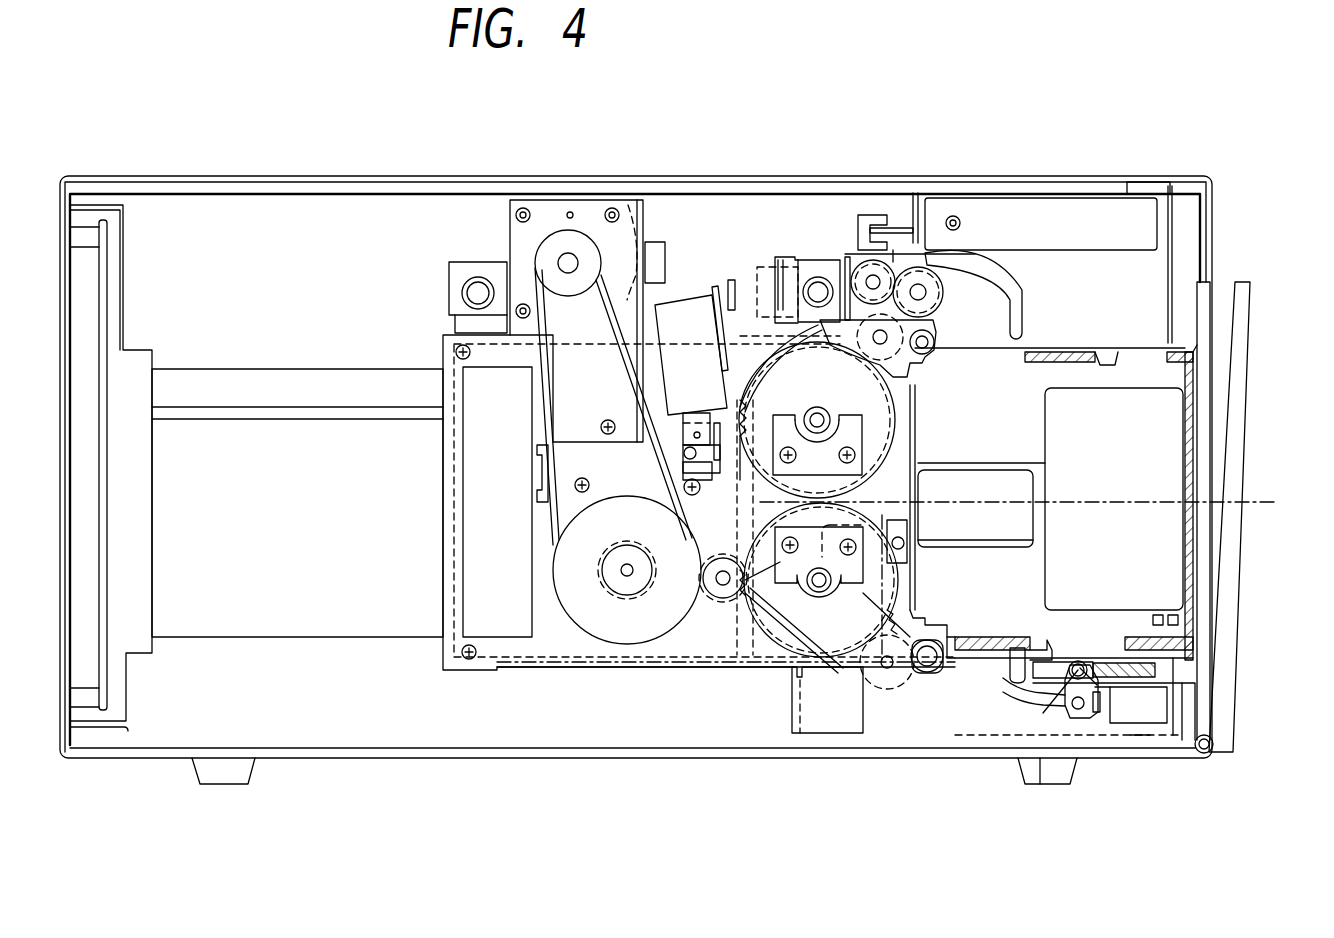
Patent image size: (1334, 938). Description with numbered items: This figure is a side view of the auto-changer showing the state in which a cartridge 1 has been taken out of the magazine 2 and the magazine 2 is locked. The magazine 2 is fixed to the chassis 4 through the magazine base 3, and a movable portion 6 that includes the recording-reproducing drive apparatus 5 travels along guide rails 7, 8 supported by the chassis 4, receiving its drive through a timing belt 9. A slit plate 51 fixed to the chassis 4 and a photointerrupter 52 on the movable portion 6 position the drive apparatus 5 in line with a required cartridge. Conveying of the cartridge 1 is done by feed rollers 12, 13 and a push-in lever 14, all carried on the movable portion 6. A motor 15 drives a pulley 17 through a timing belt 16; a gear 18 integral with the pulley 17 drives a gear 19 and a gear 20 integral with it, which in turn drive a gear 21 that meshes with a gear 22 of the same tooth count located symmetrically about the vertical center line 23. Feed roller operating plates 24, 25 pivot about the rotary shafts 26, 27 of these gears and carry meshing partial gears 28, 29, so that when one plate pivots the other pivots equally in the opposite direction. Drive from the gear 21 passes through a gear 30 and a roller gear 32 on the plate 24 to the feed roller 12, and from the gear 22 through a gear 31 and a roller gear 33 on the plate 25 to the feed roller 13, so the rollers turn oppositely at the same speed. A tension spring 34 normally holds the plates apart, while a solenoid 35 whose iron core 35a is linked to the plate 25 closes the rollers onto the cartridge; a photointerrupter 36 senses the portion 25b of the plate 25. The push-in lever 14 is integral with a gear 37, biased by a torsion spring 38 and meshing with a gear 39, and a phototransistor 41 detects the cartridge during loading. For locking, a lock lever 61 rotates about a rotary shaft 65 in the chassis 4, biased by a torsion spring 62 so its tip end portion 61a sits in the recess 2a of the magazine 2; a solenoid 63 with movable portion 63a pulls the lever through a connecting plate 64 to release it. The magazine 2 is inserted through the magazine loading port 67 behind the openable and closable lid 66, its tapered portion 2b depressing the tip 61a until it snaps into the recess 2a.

The cartridge 1 is at (1180, 425).
The magazine 2 is at (1195, 648).
The recess 2a is at (1030, 648).
The tapered portion 2b is at (953, 680).
The magazine base 3 is at (1098, 672).
The chassis 4 is at (1145, 748).
The recording-reproducing apparatus 5 is at (530, 660).
The movable portion 6 is at (637, 669).
The guide rail 7 is at (818, 276).
The guide rail 8 is at (478, 277).
The timing belt 9 is at (760, 290).
The feed roller 12 is at (943, 673).
The feed roller 13 is at (1030, 295).
The push-in lever 14 is at (1045, 297).
The motor 15 is at (592, 203).
The timing belt 16 is at (612, 285).
The pulley 17 is at (610, 640).
The gear 18 is at (606, 590).
The gear 19 is at (722, 605).
The gear 20 is at (712, 600).
The gear 21 is at (775, 600).
The gear 22 is at (740, 405).
The vertical center line 23 is at (1272, 503).
The feed roller operating plate 24 is at (833, 670).
The feed roller operating plate 25 is at (840, 262).
The portion 25b is at (738, 600).
The rotary shaft 26 is at (845, 575).
The rotary shaft 27 is at (830, 423).
The partial gear 28 is at (908, 543).
The partial gear 29 is at (833, 473).
The gear 30 is at (883, 684).
The gear 31 is at (918, 265).
The roller gear 32 is at (927, 672).
The roller gear 33 is at (934, 320).
The tension spring 34 is at (763, 413).
The solenoid 35 is at (680, 300).
The iron core 35a is at (540, 460).
The photointerrupter 36 is at (580, 488).
The gear 37 is at (983, 256).
The torsion spring 38 is at (940, 290).
The gear 39 is at (885, 262).
The phototransistor 41 is at (1020, 565).
The slit plate 51 is at (893, 258).
The photointerrupter 52 is at (862, 216).
The lock lever 61 is at (1038, 735).
The tip end portion 61a is at (1000, 684).
The torsion spring 62 is at (1068, 748).
The solenoid 63 is at (1170, 742).
The movable portion 63a is at (1136, 752).
The connecting plate 64 is at (1100, 740).
The rotary shaft 65 is at (1120, 690).
The openable and closable lid 66 is at (1237, 385).
The magazine loading port 67 is at (1195, 342).